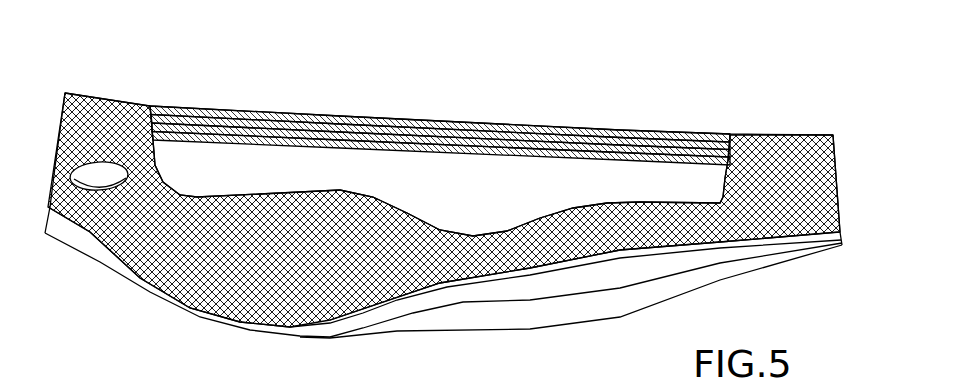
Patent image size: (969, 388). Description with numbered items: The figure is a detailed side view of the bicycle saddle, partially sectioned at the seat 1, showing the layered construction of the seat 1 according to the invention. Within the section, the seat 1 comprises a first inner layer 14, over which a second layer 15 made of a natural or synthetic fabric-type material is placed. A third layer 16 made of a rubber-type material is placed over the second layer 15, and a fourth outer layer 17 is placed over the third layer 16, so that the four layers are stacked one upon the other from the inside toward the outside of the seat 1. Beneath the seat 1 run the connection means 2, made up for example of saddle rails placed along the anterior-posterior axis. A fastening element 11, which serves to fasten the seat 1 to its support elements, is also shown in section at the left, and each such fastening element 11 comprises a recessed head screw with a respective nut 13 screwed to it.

The seat 1 is at (774, 126).
The connection means 2 is at (613, 322).
The fastening element 11 is at (105, 162).
The nut 13 is at (83, 238).
The first inner layer 14 is at (370, 123).
The second layer 15 is at (443, 120).
The third layer 16 is at (528, 123).
The fourth outer layer 17 is at (617, 130).